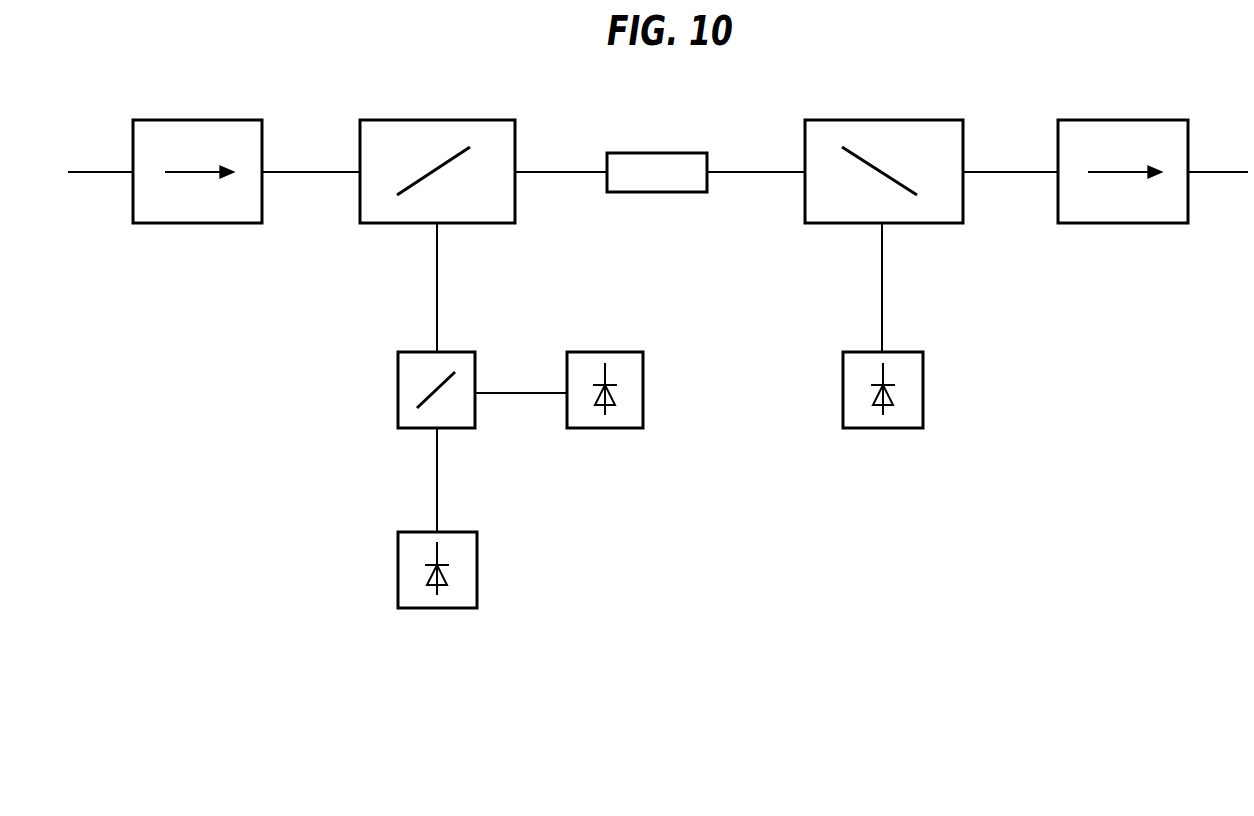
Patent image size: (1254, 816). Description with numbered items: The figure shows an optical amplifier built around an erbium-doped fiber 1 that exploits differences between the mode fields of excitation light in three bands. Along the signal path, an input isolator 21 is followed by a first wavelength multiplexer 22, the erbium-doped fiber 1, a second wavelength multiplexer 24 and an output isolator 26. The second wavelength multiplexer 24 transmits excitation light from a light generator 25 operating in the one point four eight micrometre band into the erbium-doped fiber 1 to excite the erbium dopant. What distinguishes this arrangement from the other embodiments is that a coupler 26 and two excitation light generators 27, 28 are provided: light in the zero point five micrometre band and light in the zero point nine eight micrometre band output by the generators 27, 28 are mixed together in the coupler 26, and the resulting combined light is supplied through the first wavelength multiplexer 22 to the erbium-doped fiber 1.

The erbium-doped fiber 1 is at (659, 193).
The isolator 21 is at (197, 224).
The first wavelength multiplexer 22 is at (473, 224).
The second wavelength multiplexer 24 is at (917, 224).
The 1.48 µm light generator 25 is at (925, 370).
The isolator / coupler 26 is at (1120, 224).
The excitation light generator 27 is at (479, 550).
The excitation light generator 28 is at (645, 370).